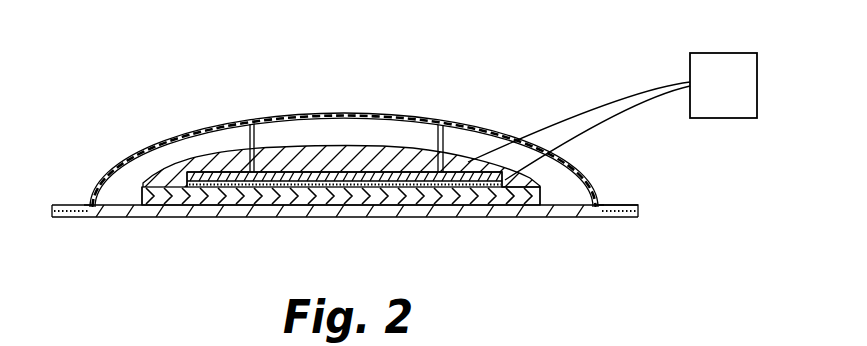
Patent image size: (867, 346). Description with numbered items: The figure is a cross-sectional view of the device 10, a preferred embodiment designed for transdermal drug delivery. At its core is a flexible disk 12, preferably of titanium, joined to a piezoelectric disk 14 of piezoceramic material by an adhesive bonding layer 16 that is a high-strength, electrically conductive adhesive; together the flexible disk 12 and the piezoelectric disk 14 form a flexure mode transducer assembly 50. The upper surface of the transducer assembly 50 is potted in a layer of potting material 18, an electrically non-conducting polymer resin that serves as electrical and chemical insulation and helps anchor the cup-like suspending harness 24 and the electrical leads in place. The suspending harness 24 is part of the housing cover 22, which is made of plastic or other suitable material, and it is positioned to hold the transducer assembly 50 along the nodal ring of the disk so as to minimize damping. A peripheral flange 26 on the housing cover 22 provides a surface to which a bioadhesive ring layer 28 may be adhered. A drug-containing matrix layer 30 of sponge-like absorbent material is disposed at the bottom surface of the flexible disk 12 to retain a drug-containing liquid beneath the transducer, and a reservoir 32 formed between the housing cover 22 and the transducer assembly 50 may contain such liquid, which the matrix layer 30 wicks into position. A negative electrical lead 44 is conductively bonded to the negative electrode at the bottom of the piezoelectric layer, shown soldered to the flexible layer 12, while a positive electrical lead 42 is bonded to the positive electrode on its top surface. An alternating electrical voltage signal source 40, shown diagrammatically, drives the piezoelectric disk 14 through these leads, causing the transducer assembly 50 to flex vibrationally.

The device 10 is at (143, 73).
The flexible disk 12 is at (192, 200).
The piezoelectric disk 14 is at (287, 176).
The adhesive bonding layer 16 is at (180, 187).
The potting layer 18 is at (360, 157).
The housing cover 22 is at (405, 115).
The cup-like suspending harness 24 is at (249, 136).
The peripheral flange 26 is at (627, 204).
The bioadhesive ring layer 28 is at (620, 218).
The drug-containing matrix layer 30 is at (463, 209).
The reservoir 32 is at (565, 192).
The alternating electrical voltage signal source 40 is at (720, 63).
The positive electrical lead 42 is at (613, 99).
The negative electrical lead 44 is at (622, 114).
The flexure mode transducer assembly 50 is at (135, 182).